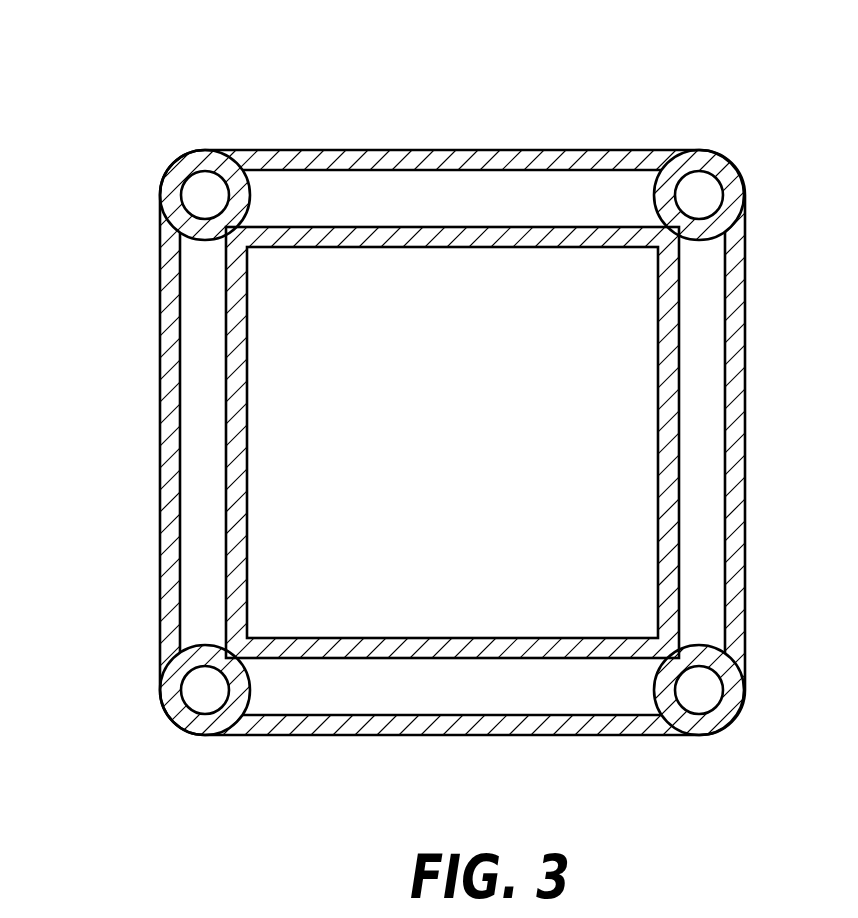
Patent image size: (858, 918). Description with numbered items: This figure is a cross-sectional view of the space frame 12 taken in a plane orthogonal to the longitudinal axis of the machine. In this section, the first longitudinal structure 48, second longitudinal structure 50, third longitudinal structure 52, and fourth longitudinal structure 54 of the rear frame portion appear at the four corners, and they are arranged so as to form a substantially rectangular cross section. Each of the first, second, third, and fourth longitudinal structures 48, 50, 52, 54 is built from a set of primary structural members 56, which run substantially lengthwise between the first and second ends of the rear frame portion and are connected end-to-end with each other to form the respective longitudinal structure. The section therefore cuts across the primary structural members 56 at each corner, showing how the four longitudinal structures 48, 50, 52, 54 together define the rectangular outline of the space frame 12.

The space frame 12 is at (543, 65).
The first longitudinal structure 48 is at (712, 150).
The second longitudinal structure 50 is at (717, 732).
The third longitudinal structure 52 is at (173, 161).
The fourth longitudinal structure 54 is at (167, 715).
The primary structural members 56 is at (176, 208).